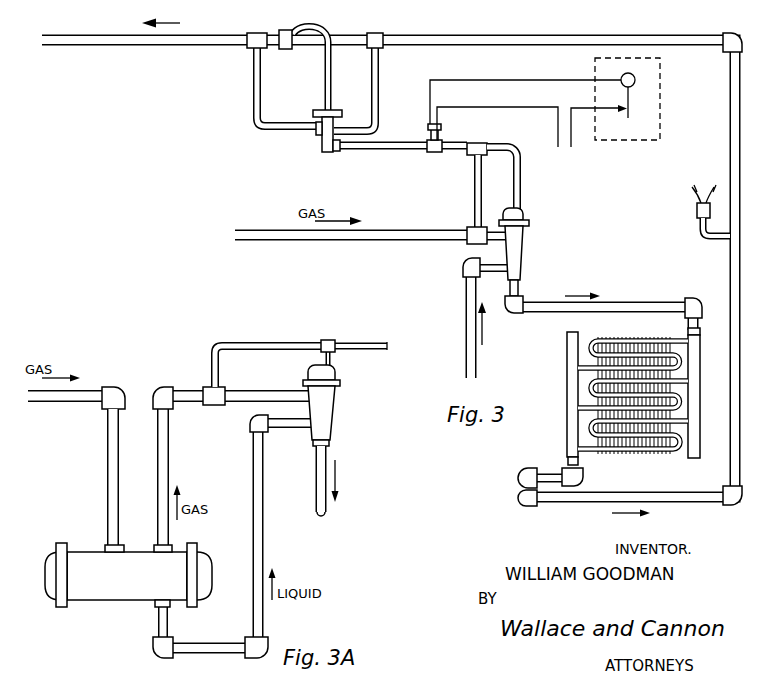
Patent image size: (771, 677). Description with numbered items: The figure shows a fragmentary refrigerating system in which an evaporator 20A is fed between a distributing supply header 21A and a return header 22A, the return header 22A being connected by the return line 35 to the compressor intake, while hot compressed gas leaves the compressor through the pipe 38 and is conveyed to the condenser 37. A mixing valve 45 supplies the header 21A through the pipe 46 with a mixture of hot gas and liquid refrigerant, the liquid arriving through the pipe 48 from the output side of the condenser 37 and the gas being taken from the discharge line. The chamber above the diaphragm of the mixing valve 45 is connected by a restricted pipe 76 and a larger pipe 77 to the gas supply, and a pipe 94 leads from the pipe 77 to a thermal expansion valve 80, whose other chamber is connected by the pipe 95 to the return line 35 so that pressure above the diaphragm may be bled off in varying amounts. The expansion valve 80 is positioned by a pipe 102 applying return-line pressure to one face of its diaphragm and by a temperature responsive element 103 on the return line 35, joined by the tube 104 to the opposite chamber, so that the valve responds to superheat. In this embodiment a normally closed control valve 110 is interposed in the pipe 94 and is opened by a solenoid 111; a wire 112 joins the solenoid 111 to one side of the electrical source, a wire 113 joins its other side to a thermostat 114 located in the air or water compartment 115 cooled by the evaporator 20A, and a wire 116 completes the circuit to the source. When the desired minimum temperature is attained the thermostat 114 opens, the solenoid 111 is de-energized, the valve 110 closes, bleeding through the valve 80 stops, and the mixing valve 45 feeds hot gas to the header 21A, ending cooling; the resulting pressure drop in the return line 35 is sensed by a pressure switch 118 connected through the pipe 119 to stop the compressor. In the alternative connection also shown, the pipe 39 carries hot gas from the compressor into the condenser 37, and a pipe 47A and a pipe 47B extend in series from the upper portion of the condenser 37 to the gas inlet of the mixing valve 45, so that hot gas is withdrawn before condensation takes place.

In FIG. 3, the return line 35 is at (730, 147).
In FIG. 3, the pipe 95 is at (256, 91).
In FIG. 3, the tube 104 is at (327, 92).
In FIG. 3, the pipe 102 is at (382, 73).
In FIG. 3, the temperature responsive element 103 is at (284, 49).
In FIG. 3, the thermal expansion valve 80 is at (312, 146).
In FIG. 3, the control valve 110 is at (430, 141).
In FIG. 3, the solenoid 111 is at (441, 131).
In FIG. 3, the wire 113 is at (502, 80).
In FIG. 3, the thermostat 114 is at (632, 98).
In FIG. 3, the compartment 115 is at (661, 111).
In FIG. 3, the wire 112 is at (556, 118).
In FIG. 3, the wire 116 is at (582, 108).
In FIG. 3, the pipe 94 is at (462, 147).
In FIG. 3A, the pipe 94 is at (386, 352).
In FIG. 3, the pipe 77 is at (521, 188).
In FIG. 3A, the pipe 77 is at (335, 359).
In FIG. 3, the pipe 76 is at (474, 204).
In FIG. 3A, the pipe 76 is at (280, 347).
In FIG. 3, the pipe 38 is at (389, 243).
In FIG. 3A, the pipe 38 is at (75, 400).
In FIG. 3, the pipe 48 is at (465, 313).
In FIG. 3A, the pipe 48 is at (265, 541).
In FIG. 3, the pipe 46 is at (625, 305).
In FIG. 3, the mixing valve 45 is at (533, 241).
In FIG. 3A, the mixing valve 45 is at (327, 416).
In FIG. 3, the distributing supply header 21A is at (695, 404).
In FIG. 3, the return header 22A is at (566, 377).
In FIG. 3, the evaporator 20A is at (617, 345).
In FIG. 3, the pressure switch 118 is at (697, 211).
In FIG. 3, the pipe 119 is at (705, 234).
In FIG. 3A, the condenser 37 is at (125, 593).
In FIG. 3A, the pipe 39 is at (107, 466).
In FIG. 3A, the pipe 47A is at (192, 405).
In FIG. 3A, the pipe 47B is at (170, 464).